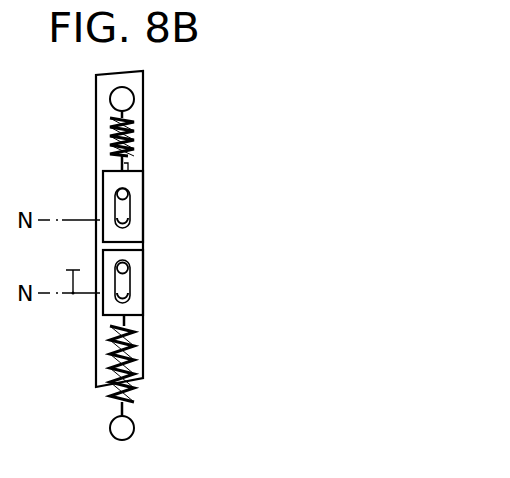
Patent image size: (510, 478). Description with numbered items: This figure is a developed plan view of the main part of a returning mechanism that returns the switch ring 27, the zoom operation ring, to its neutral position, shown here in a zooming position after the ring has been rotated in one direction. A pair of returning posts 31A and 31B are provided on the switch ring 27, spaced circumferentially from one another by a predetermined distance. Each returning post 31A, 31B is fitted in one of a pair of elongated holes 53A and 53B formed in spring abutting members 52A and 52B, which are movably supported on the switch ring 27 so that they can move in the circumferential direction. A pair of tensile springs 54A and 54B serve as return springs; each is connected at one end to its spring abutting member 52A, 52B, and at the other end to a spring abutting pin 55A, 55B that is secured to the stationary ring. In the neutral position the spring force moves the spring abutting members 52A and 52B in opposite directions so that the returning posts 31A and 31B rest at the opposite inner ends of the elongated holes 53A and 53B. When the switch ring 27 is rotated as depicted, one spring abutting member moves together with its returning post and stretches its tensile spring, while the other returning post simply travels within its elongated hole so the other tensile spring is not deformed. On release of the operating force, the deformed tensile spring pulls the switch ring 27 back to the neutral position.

The switch ring 27 is at (75, 229).
The returning post 31A is at (88, 201).
The returning post 31B is at (129, 265).
The spring abutting member 52A is at (138, 213).
The spring abutting member 52B is at (137, 303).
The elongated hole 53A is at (136, 220).
The elongated hole 53B is at (130, 283).
The tensile spring 54A is at (136, 131).
The tensile spring 54B is at (136, 366).
The spring abutting pin 55A is at (133, 93).
The spring abutting pin 55B is at (133, 423).